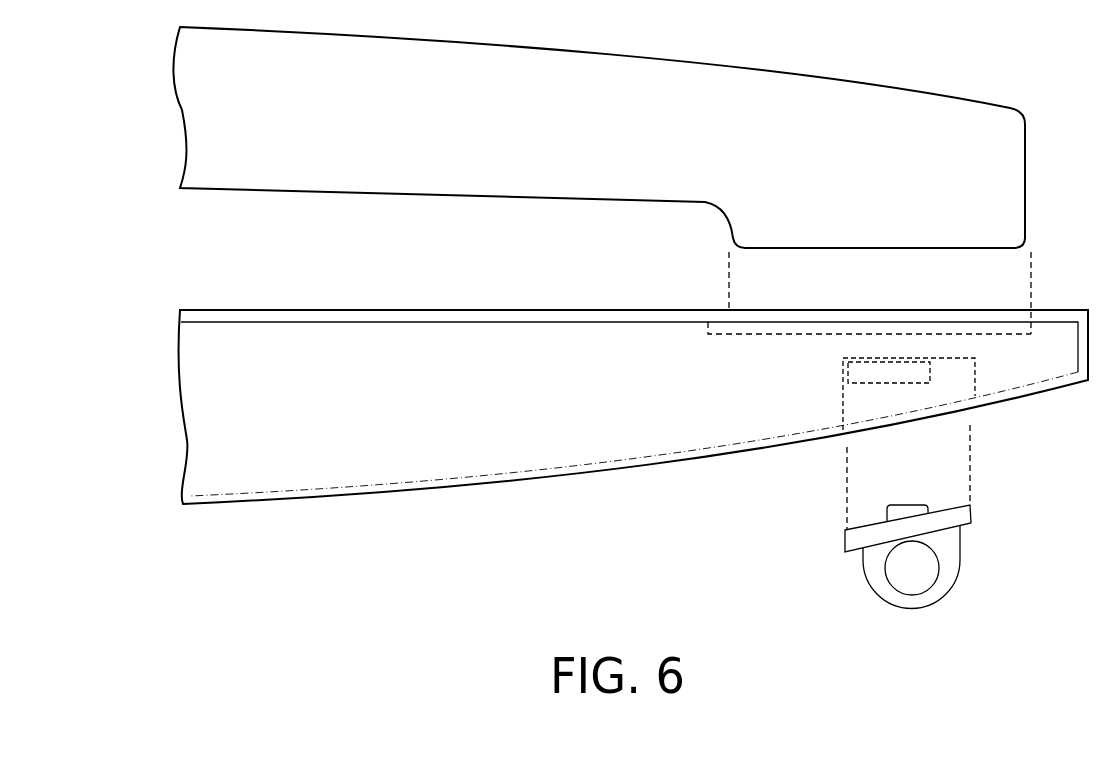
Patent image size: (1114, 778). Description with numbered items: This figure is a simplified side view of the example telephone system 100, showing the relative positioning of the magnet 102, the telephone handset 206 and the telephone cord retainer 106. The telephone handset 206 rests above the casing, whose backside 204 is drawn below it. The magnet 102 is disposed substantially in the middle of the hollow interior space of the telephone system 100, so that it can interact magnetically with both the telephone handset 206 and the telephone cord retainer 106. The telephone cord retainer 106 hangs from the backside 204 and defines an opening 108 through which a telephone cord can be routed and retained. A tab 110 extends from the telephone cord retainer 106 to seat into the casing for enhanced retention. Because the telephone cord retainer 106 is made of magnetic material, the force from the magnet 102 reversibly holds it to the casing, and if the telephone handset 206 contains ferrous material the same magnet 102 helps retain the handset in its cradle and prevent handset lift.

The telephone system 100 is at (933, 70).
The magnet 102 is at (843, 372).
The telephone cord retainer 106 is at (972, 514).
The opening 108 is at (925, 578).
The tab 110 is at (910, 504).
The backside 204 is at (650, 470).
The telephone handset 206 is at (578, 196).